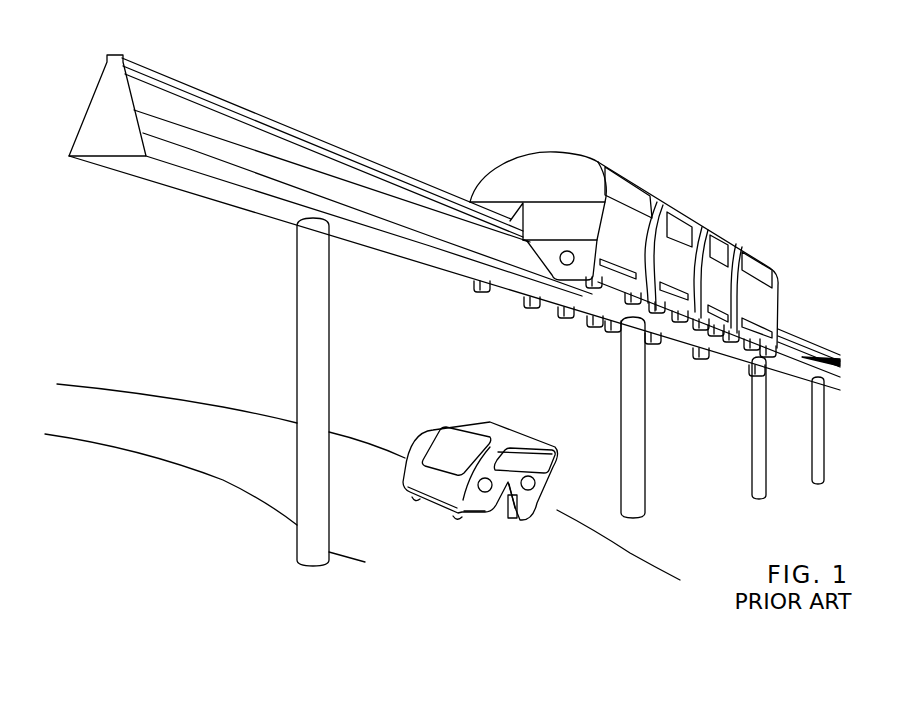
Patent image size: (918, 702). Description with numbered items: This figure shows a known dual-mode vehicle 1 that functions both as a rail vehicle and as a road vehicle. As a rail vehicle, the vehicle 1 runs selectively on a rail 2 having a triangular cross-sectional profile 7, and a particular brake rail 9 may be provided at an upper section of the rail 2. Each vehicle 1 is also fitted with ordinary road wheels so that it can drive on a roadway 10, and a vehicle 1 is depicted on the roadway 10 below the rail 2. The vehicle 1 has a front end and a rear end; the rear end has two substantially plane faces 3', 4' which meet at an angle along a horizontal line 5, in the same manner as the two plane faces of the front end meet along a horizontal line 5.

The vehicle 1 is at (625, 183).
The rail 2 is at (180, 180).
The rear plane face 3' is at (556, 455).
The rear plane face 4' is at (555, 501).
The horizontal line 5 is at (482, 510).
The triangular cross-sectional profile 7 is at (105, 128).
The brake rail 9 is at (140, 62).
The roadway 10 is at (398, 574).